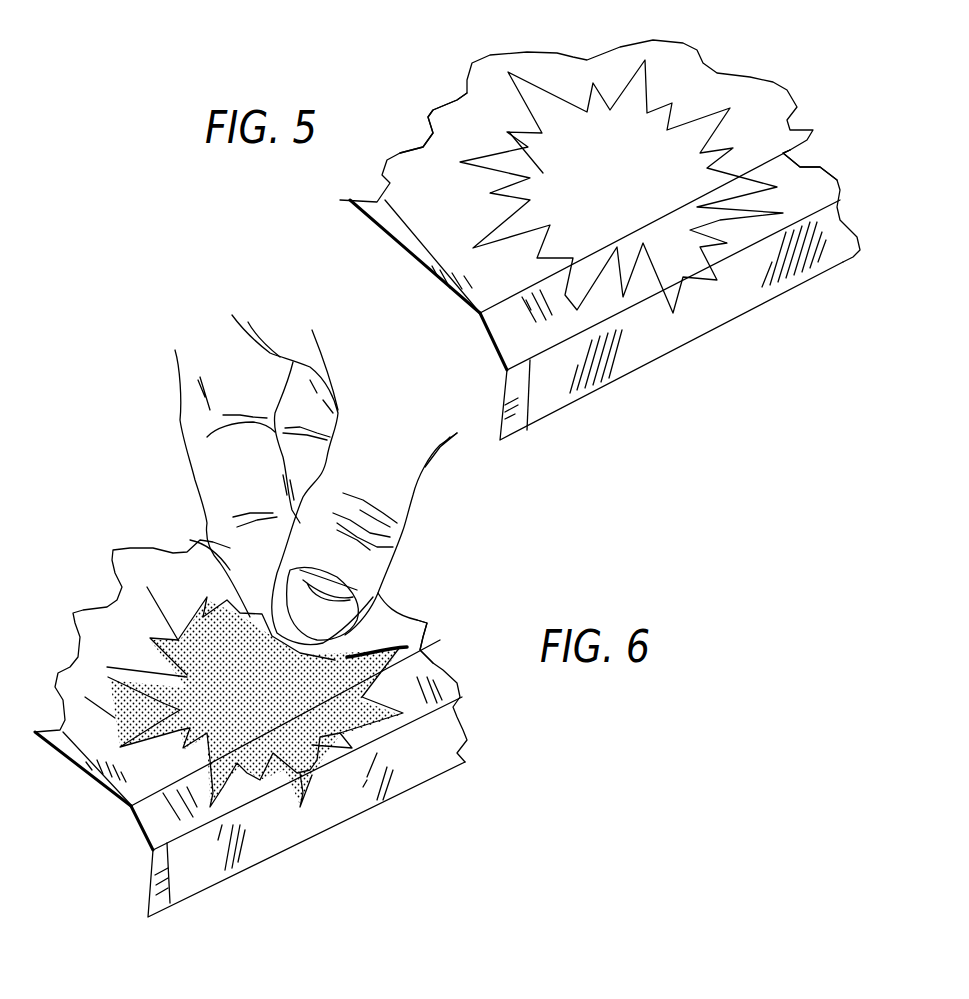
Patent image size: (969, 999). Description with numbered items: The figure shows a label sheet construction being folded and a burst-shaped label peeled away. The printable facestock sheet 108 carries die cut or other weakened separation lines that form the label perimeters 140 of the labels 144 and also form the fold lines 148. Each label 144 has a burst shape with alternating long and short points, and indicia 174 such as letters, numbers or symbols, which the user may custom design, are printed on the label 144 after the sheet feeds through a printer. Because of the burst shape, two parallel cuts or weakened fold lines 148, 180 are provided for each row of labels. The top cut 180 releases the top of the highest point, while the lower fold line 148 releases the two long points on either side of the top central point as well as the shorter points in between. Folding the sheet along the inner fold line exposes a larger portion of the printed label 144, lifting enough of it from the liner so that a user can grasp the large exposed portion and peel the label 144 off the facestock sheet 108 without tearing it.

In FIG. 5, the facestock sheet 108 is at (763, 105).
In FIG. 6, the facestock sheet 108 is at (113, 627).
In FIG. 5, the label perimeters 140 is at (652, 80).
In FIG. 5, the labels 144 is at (538, 99).
In FIG. 6, the labels 144 is at (173, 618).
In FIG. 5, the fold lines 148 is at (822, 165).
In FIG. 6, the fold lines 148 is at (424, 639).
In FIG. 5, the indicia 174 is at (467, 95).
In FIG. 5, the top cut 180 is at (728, 257).
In FIG. 6, the top cut 180 is at (470, 738).